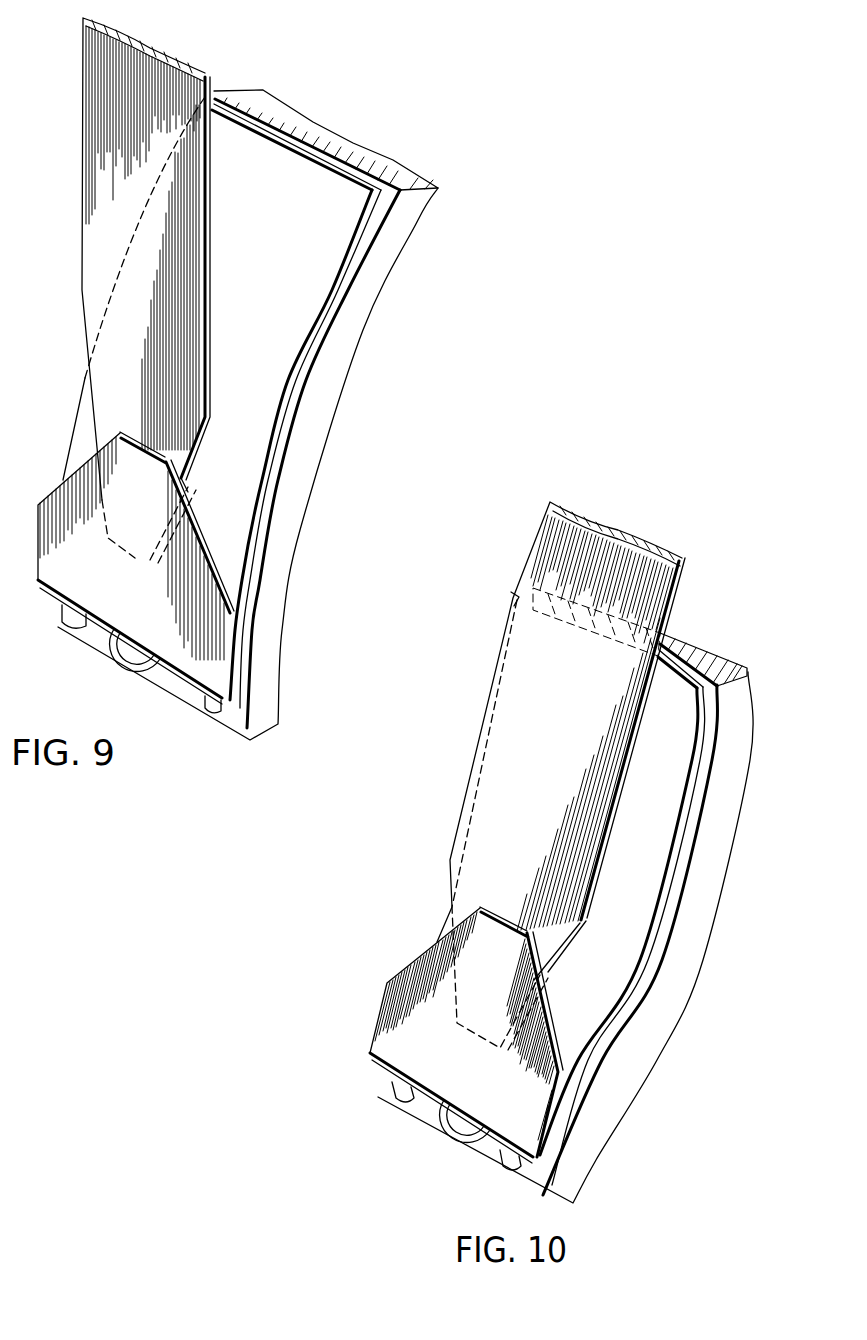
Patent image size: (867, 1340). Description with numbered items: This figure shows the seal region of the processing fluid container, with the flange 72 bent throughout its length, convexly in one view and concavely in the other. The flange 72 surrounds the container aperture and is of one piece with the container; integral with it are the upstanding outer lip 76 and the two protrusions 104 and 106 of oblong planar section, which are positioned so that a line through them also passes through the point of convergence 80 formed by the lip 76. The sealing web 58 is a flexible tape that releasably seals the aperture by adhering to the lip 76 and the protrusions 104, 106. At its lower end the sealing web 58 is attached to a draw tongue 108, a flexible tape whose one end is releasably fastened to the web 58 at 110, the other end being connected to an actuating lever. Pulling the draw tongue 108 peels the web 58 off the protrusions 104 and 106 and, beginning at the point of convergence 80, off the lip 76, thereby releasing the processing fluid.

In FIG. 9, the sealing web 58 is at (236, 530).
In FIG. 10, the sealing web 58 is at (590, 1027).
In FIG. 9, the flange 72 is at (344, 357).
In FIG. 10, the flange 72 is at (733, 832).
In FIG. 9, the outer lip 76 is at (150, 666).
In FIG. 10, the outer lip 76 is at (475, 1137).
In FIG. 9, the point of convergence 80 is at (133, 670).
In FIG. 10, the point of convergence 80 is at (457, 1135).
In FIG. 9, the protrusion 104 is at (70, 623).
In FIG. 10, the protrusion 104 is at (392, 1092).
In FIG. 9, the protrusion 106 is at (208, 716).
In FIG. 10, the protrusion 106 is at (503, 1162).
In FIG. 9, the draw tongue 108 is at (142, 332).
In FIG. 10, the draw tongue 108 is at (569, 720).
In FIG. 9, the releasable fastening 110 is at (152, 470).
In FIG. 10, the releasable fastening 110 is at (518, 970).